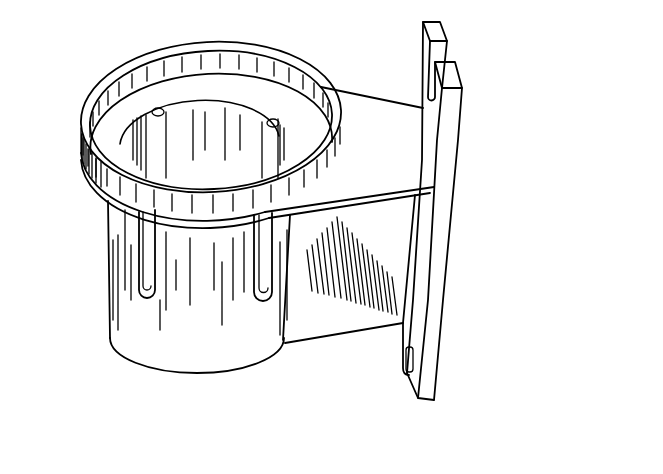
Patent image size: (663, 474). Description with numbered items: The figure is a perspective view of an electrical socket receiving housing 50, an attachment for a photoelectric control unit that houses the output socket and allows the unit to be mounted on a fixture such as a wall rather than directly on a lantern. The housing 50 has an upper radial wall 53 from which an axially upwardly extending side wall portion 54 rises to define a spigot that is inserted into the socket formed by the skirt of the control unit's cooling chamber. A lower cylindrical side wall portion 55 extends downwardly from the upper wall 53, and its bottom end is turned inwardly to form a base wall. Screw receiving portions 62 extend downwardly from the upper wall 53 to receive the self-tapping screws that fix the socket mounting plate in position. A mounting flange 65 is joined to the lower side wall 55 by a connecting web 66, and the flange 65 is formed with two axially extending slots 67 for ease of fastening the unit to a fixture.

The electrical socket receiving housing 50 is at (538, 172).
The upper radial wall 53 is at (127, 108).
The axially upwardly extending side wall portion 54 is at (88, 177).
The lower cylindrical side wall portion 55 is at (126, 256).
The screw receiving portions 62 is at (168, 135).
The mounting flange 65 is at (440, 272).
The connecting web 66 is at (333, 317).
The axially extending slots 67 is at (452, 54).